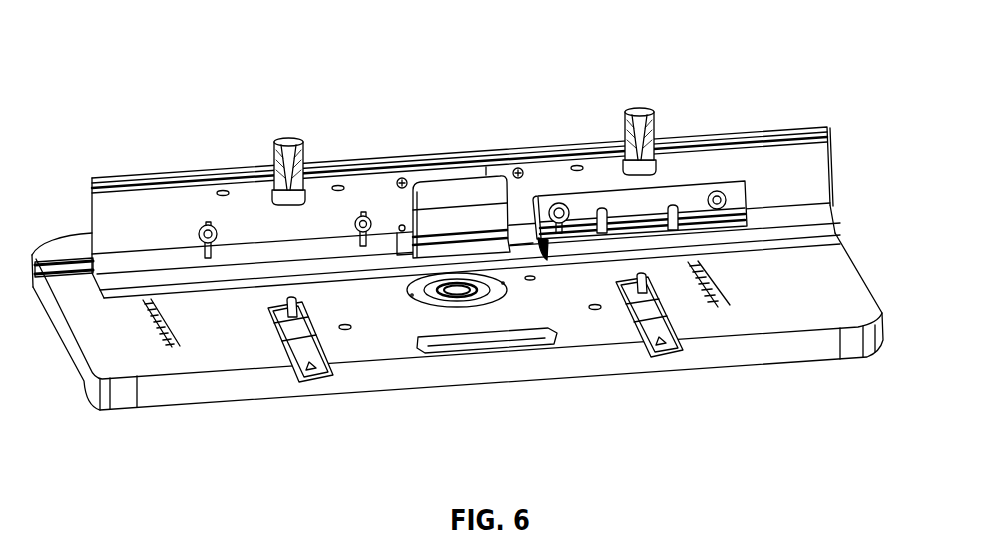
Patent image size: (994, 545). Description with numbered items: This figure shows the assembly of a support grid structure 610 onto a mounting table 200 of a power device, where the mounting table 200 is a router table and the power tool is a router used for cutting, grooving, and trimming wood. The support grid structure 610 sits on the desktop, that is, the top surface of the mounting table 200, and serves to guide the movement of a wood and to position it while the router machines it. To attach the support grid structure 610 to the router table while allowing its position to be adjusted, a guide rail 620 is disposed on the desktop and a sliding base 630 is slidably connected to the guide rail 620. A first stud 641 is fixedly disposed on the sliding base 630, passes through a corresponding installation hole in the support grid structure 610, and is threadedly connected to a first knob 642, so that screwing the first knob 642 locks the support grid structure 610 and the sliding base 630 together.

The mounting table 200 is at (822, 290).
The support grid structure 610 is at (780, 170).
The guide rail 620 is at (317, 372).
The sliding base 630 is at (287, 347).
The first stud 641 is at (278, 318).
The first knob 642 is at (276, 152).